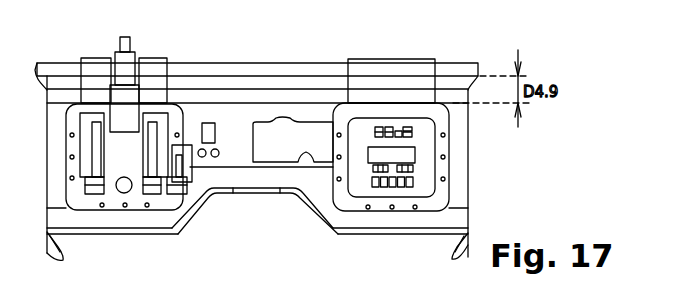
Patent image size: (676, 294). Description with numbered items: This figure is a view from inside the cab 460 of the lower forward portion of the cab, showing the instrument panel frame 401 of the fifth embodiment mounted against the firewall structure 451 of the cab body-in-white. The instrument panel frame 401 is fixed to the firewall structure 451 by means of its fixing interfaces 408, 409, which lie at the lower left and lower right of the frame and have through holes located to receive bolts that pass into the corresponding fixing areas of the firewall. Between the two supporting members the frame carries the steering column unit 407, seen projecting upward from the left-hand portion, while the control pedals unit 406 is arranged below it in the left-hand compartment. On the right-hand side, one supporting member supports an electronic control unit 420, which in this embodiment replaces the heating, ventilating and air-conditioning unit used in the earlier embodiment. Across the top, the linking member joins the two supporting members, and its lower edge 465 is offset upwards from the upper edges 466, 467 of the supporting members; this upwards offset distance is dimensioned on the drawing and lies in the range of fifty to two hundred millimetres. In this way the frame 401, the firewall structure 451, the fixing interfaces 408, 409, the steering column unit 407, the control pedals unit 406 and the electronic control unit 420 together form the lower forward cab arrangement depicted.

The instrument panel frame 401 is at (493, 162).
The cab 460 is at (535, 198).
The lower edge of the linking member 465 is at (270, 76).
The upper edge of the supporting member 466 is at (151, 101).
The upper edge of the supporting member 467 is at (372, 103).
The steering column unit 407 is at (118, 40).
The fixing interface 408 is at (75, 190).
The control pedals unit 406 is at (133, 207).
The firewall structure 451 is at (245, 177).
The electronic control unit (ECU) 420 is at (360, 184).
The fixing interface 409 is at (423, 203).